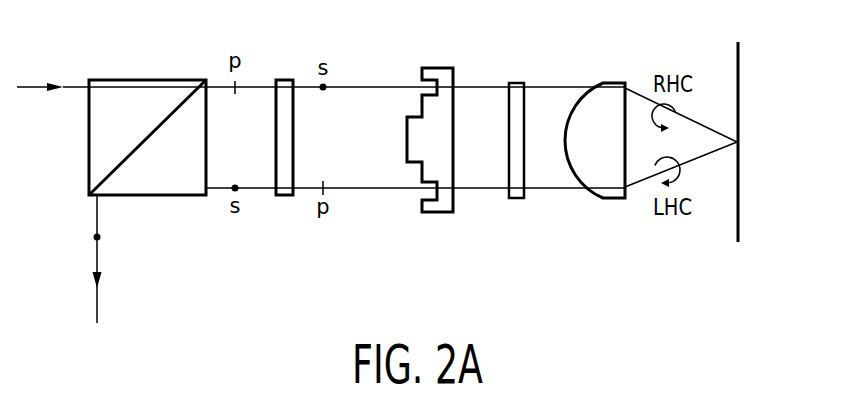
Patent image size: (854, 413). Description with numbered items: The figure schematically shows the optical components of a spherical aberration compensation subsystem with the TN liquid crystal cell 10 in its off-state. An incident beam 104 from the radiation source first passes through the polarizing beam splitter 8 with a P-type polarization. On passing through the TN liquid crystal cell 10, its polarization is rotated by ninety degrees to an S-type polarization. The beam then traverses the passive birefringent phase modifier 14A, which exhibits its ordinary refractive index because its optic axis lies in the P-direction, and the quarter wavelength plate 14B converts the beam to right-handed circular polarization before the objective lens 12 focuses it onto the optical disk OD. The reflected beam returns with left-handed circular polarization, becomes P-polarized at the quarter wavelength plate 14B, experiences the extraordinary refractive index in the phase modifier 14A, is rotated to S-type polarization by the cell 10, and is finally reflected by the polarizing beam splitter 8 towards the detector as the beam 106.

The incident beam 104 is at (38, 83).
The polarizing beam splitter 8 is at (154, 80).
The TN liquid crystal cell 10 is at (281, 79).
The passive phase modifier 14A is at (438, 67).
The polarization rotating element 14B is at (517, 82).
The objective lens 12 is at (618, 82).
The reflected beam 106 is at (97, 304).
The optical disk OD is at (742, 58).